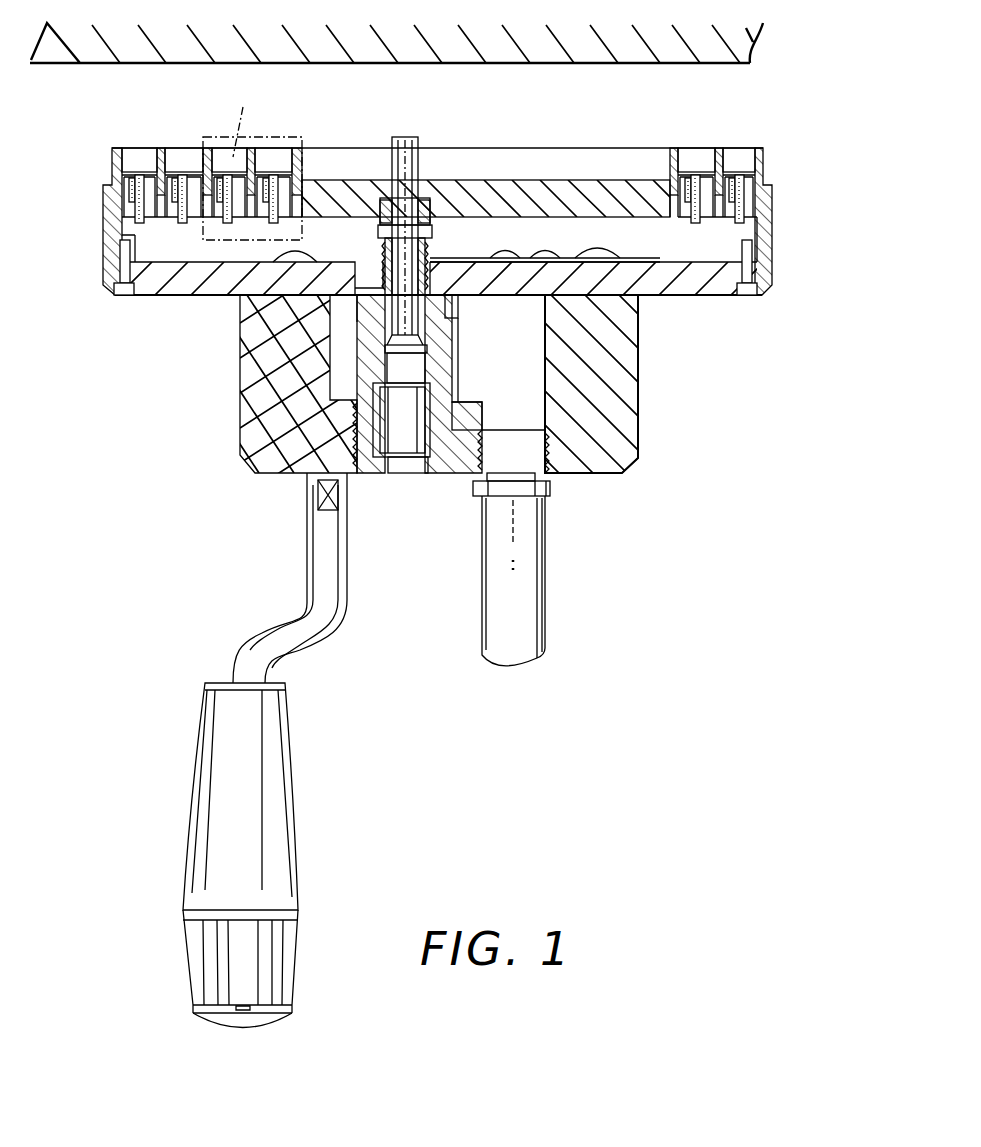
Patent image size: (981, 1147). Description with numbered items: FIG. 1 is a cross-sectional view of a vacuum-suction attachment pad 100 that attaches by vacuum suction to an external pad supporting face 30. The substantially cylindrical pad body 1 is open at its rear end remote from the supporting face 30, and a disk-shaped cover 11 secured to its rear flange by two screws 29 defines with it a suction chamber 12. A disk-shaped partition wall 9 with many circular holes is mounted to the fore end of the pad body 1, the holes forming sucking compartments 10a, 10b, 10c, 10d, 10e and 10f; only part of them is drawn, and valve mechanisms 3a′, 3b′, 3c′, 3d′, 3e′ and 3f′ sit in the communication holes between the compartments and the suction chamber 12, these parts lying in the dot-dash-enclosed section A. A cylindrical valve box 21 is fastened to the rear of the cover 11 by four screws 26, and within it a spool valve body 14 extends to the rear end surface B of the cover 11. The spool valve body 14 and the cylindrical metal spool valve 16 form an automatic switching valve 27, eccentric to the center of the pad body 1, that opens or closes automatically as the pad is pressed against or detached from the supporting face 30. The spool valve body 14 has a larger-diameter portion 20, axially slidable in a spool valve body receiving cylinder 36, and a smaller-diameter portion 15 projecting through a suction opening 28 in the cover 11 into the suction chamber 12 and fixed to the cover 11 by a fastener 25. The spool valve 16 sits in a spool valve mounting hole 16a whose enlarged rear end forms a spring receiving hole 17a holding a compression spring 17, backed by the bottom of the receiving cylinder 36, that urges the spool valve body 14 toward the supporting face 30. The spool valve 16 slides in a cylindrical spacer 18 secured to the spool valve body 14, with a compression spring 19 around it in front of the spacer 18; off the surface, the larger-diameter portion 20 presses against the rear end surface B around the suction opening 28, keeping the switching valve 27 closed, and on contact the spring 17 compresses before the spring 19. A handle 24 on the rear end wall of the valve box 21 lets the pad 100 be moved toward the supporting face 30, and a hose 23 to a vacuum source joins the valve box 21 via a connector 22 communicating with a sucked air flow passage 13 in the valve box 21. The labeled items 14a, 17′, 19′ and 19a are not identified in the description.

The pad body 1 is at (543, 193).
The partition wall 9 is at (162, 152).
The sucking compartment 10a is at (283, 137).
The sucking compartment 10b is at (272, 157).
The sucking compartment 10c is at (186, 157).
The sucking compartment 10d is at (138, 157).
The sucking compartment 10e is at (692, 162).
The sucking compartment 10f is at (738, 158).
The valve mechanism 3a′ is at (298, 236).
The valve mechanism 3b′ is at (192, 297).
The valve mechanism 3c′ is at (162, 297).
The valve mechanism 3d′ is at (127, 210).
The valve mechanism 3e′ is at (668, 185).
The valve mechanism 3f′ is at (747, 193).
The cover 11 is at (187, 296).
The suction chamber 12 is at (140, 297).
The sucked air flow passage 13 is at (637, 383).
The spool valve body 14 is at (445, 333).
The bore opening 14a is at (432, 258).
The smaller-diameter portion 15 is at (380, 200).
The spool valve 16 is at (413, 137).
The spool valve mounting hole 16a is at (452, 314).
The compression spring 17 is at (378, 473).
The valve body 17′ is at (435, 378).
The spring receiving hole 17a is at (357, 475).
The cylindrical spacer 18 is at (637, 383).
The compression spring 19 is at (345, 415).
The bushing 19′ is at (430, 334).
The spring housing 19a is at (320, 410).
The larger-diameter portion 20 is at (398, 458).
The valve box 21 is at (630, 470).
The connector 22 is at (548, 478).
The hose 23 is at (525, 607).
The handle 24 is at (272, 836).
The fastener 25 is at (485, 258).
The screws 26 is at (613, 257).
The automatic switching valve 27 is at (430, 235).
The suction opening 28 is at (365, 262).
The screws 29 is at (100, 283).
The pad supporting face 30 is at (99, 65).
The spool valve body receiving cylinder 36 is at (400, 447).
The vacuum-suction attachment pad 100 is at (773, 222).
The section A is at (252, 154).
The rear end surface B is at (300, 378).